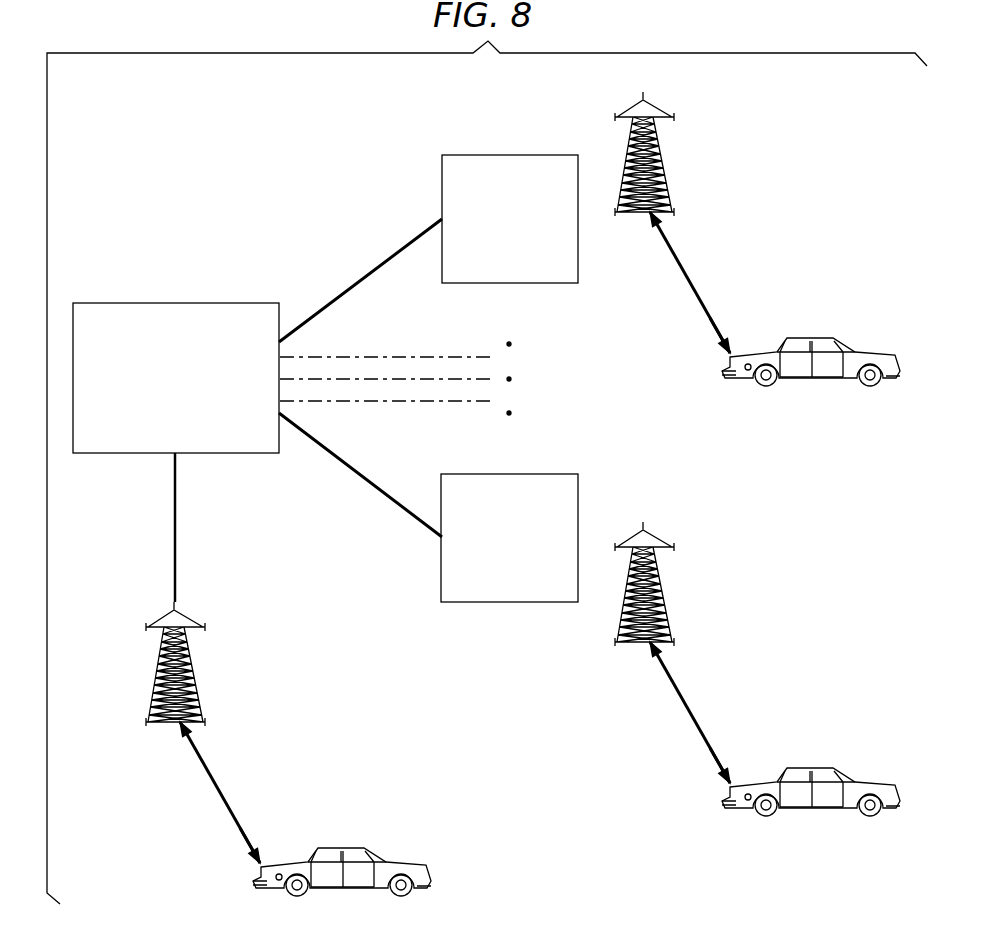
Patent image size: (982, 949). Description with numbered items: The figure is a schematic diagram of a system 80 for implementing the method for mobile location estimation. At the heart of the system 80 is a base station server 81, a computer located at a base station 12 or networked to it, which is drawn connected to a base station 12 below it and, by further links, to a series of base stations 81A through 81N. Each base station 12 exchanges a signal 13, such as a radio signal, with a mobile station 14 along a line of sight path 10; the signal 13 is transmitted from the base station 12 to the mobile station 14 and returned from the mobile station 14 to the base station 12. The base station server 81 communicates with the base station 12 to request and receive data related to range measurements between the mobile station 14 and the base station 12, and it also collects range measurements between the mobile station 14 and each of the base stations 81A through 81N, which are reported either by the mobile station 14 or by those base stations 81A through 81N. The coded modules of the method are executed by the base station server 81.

The system 80 is at (208, 140).
The base station server 81 is at (212, 303).
The base station 81A is at (545, 155).
The base station 81N is at (543, 474).
The base station 12 is at (414, 409).
The line of sight path 10 is at (464, 537).
The signal 13 is at (504, 572).
The mobile station 14 is at (576, 595).